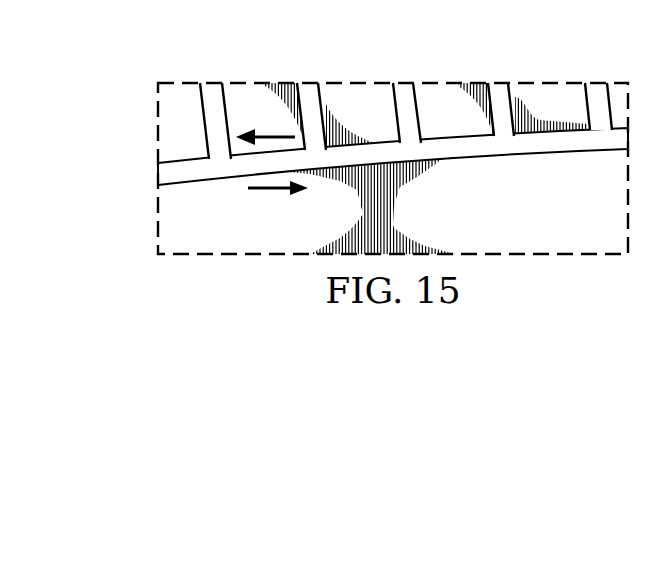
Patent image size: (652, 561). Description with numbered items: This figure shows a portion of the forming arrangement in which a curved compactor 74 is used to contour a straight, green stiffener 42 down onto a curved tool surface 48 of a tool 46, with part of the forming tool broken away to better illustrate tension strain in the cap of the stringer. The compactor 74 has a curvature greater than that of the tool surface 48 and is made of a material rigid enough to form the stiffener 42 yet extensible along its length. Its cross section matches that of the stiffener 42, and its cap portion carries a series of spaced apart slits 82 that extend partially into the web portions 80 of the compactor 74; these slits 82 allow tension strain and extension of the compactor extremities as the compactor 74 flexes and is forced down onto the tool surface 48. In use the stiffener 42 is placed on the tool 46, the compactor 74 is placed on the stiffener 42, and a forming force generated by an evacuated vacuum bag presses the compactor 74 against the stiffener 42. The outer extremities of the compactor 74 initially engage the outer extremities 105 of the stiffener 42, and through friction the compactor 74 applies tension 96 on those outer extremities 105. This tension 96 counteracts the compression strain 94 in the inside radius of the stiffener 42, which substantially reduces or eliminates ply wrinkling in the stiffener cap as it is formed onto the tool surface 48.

The green stiffener 42 is at (471, 131).
The tool 46 is at (581, 211).
The tool surface 48 is at (168, 184).
The compactor 74 is at (543, 109).
The web portions 80 is at (184, 107).
The slits 82 is at (318, 98).
The compression strain 94 is at (263, 189).
The tension 96 is at (275, 134).
The outer extremities of the stiffener 105 is at (189, 157).